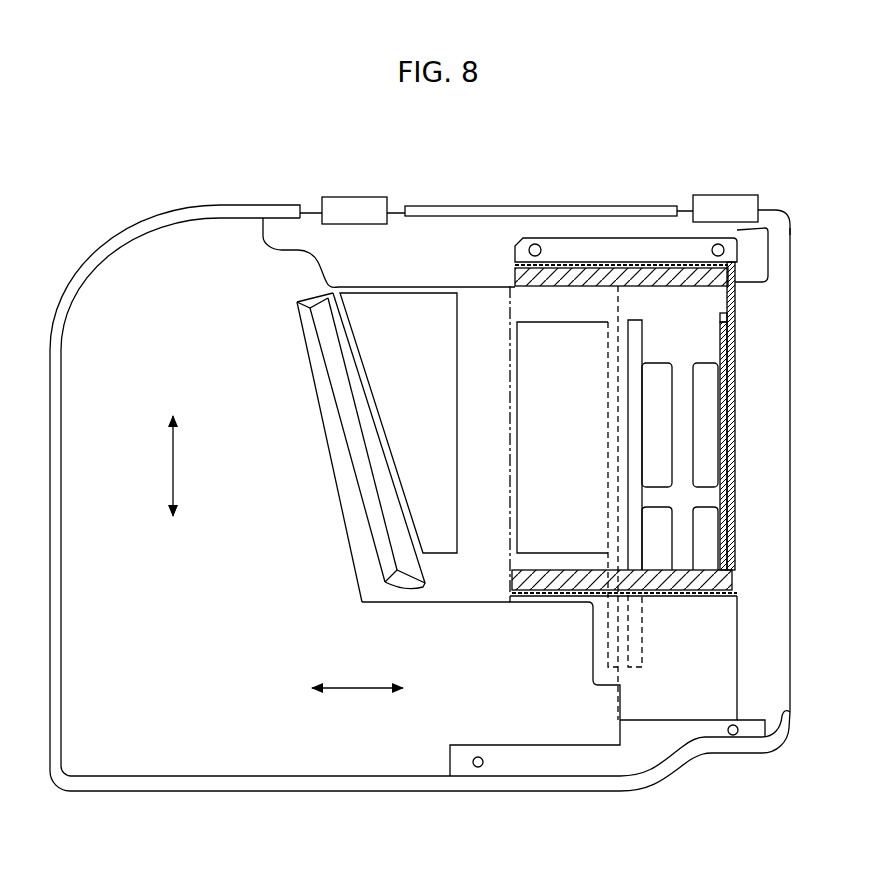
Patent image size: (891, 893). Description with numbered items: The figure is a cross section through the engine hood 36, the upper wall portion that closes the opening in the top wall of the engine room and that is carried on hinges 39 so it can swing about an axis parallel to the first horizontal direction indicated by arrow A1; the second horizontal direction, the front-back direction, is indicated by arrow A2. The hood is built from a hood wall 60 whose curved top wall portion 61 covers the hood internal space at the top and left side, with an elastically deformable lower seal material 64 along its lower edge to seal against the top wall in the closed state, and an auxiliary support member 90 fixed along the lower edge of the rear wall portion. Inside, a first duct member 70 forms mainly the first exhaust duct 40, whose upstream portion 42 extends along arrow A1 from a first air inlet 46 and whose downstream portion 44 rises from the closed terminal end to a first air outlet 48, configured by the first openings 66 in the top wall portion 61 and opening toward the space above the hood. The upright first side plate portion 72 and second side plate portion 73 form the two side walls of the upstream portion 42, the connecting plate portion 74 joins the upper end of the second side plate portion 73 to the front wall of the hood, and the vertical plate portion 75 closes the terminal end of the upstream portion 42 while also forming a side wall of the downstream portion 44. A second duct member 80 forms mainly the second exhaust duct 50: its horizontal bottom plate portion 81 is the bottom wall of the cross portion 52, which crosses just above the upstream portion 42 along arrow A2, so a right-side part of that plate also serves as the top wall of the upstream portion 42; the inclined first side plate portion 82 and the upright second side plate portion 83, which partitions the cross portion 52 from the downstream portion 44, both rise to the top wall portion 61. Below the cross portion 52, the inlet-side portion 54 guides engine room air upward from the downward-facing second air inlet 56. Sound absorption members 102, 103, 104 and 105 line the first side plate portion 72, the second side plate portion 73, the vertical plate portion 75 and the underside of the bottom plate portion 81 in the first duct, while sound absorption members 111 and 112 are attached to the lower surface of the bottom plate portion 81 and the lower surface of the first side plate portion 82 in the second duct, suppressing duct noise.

The engine hood 36 is at (104, 212).
The hinges 39 is at (357, 200).
The first exhaust duct 40 is at (498, 255).
The upstream portion 42 is at (574, 305).
The downstream portion 44 is at (673, 333).
The first air inlet 46 is at (520, 305).
The first air outlet 48 is at (664, 552).
The second exhaust duct 50 is at (357, 609).
The cross portion 52 is at (364, 465).
The inlet-side portion 54 is at (544, 692).
The second air inlet 56 is at (561, 643).
The hood wall 60 is at (124, 742).
The top wall portion 61 is at (160, 278).
The lower seal material 64 is at (343, 783).
The first openings 66 is at (705, 467).
The first duct member 70 is at (746, 601).
The first side plate portion 72 is at (563, 250).
The second side plate portion 73 is at (542, 598).
The connecting plate portion 74 is at (723, 657).
The vertical plate portion 75 is at (733, 376).
The second duct member 80 is at (463, 609).
The bottom plate portion 81 is at (447, 575).
The first side plate portion 82 is at (363, 533).
The second side plate portion 83 is at (635, 425).
The auxiliary support member 90 is at (737, 230).
The sound absorption member 102 is at (628, 262).
The sound absorption member 103 is at (580, 582).
The sound absorption member 104 is at (733, 332).
The sound absorption member 105 is at (533, 405).
The sound absorption member 111 is at (382, 354).
The sound absorption member 112 is at (343, 402).
The first horizontal direction A1 is at (352, 688).
The second horizontal direction A2 is at (173, 462).